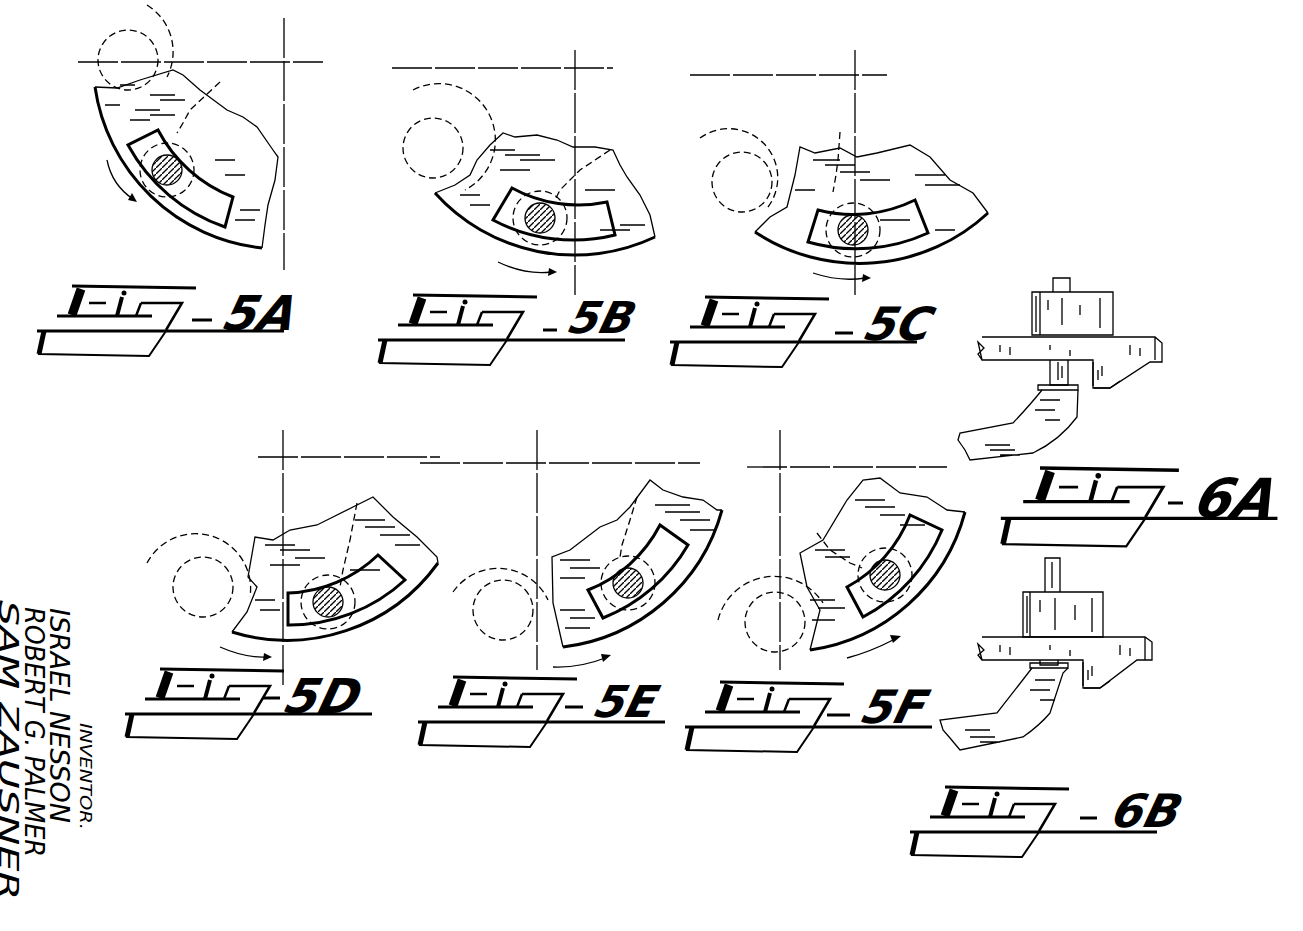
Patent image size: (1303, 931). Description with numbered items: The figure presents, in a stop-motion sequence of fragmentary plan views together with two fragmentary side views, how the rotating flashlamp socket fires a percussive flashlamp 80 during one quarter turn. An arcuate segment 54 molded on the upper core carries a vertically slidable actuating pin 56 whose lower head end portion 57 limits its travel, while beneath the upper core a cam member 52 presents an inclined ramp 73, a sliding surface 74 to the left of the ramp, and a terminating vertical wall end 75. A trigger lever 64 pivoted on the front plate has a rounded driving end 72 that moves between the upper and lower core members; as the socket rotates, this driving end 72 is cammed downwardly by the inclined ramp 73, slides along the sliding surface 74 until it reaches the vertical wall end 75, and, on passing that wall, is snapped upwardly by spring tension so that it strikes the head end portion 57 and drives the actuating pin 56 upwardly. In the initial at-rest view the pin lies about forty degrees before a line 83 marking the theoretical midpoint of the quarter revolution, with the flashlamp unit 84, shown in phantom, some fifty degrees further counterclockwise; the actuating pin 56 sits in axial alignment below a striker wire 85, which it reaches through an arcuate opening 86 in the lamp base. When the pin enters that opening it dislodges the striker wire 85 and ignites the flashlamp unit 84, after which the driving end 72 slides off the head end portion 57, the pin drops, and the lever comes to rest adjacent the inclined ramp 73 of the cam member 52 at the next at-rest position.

In FIG. 6A, the cam member 52 is at (1110, 388).
In FIG. 6B, the cam member 52 is at (1103, 688).
In FIG. 6A, the arcuate segment 54 is at (1113, 303).
In FIG. 6B, the arcuate segment 54 is at (1103, 612).
In FIG. 5A, the actuating pin 56 is at (183, 213).
In FIG. 5B, the actuating pin 56 is at (513, 243).
In FIG. 5C, the actuating pin 56 is at (872, 245).
In FIG. 5D, the actuating pin 56 is at (295, 637).
In FIG. 5E, the actuating pin 56 is at (643, 615).
In FIG. 5F, the actuating pin 56 is at (893, 610).
In FIG. 6A, the actuating pin 56 is at (1050, 372).
In FIG. 6B, the actuating pin 56 is at (1060, 573).
In FIG. 6A, the head end portion 57 is at (1040, 390).
In FIG. 6B, the trigger lever 64 is at (997, 707).
In FIG. 6A, the rounded driving end 72 is at (1018, 425).
In FIG. 6B, the rounded driving end 72 is at (1043, 713).
In FIG. 6A, the inclined ramp 73 is at (1132, 373).
In FIG. 6B, the inclined ramp 73 is at (1125, 672).
In FIG. 6A, the sliding surface 74 is at (1097, 393).
In FIG. 6B, the sliding surface 74 is at (1085, 690).
In FIG. 6A, the vertical wall end 75 is at (1097, 377).
In FIG. 6B, the vertical wall end 75 is at (1083, 673).
In FIG. 5A, the flashlamp 80 is at (110, 130).
In FIG. 5B, the flashlamp 80 is at (468, 218).
In FIG. 5C, the flashlamp 80 is at (797, 257).
In FIG. 5D, the flashlamp 80 is at (425, 590).
In FIG. 5E, the flashlamp 80 is at (713, 527).
In FIG. 5F, the flashlamp 80 is at (982, 498).
In FIG. 5A, the line 83 is at (294, 110).
In FIG. 5B, the line 83 is at (575, 103).
In FIG. 5C, the line 83 is at (855, 120).
In FIG. 5D, the line 83 is at (285, 495).
In FIG. 5E, the line 83 is at (537, 512).
In FIG. 5F, the line 83 is at (786, 498).
In FIG. 5A, the flashlamp unit 84 is at (157, 33).
In FIG. 5B, the flashlamp unit 84 is at (447, 113).
In FIG. 5C, the flashlamp unit 84 is at (730, 157).
In FIG. 5D, the flashlamp unit 84 is at (190, 560).
In FIG. 5E, the flashlamp unit 84 is at (500, 583).
In FIG. 5F, the flashlamp unit 84 is at (755, 647).
In FIG. 5A, the striker wire 85 is at (193, 133).
In FIG. 5B, the striker wire 85 is at (577, 189).
In FIG. 5C, the striker wire 85 is at (846, 187).
In FIG. 5D, the striker wire 85 is at (329, 558).
In FIG. 5E, the striker wire 85 is at (628, 546).
In FIG. 5F, the striker wire 85 is at (851, 560).
In FIG. 5A, the arcuate opening 86 is at (220, 230).
In FIG. 5B, the arcuate opening 86 is at (600, 232).
In FIG. 5C, the arcuate opening 86 is at (917, 250).
In FIG. 5D, the arcuate opening 86 is at (377, 597).
In FIG. 5E, the arcuate opening 86 is at (680, 570).
In FIG. 5F, the arcuate opening 86 is at (937, 557).